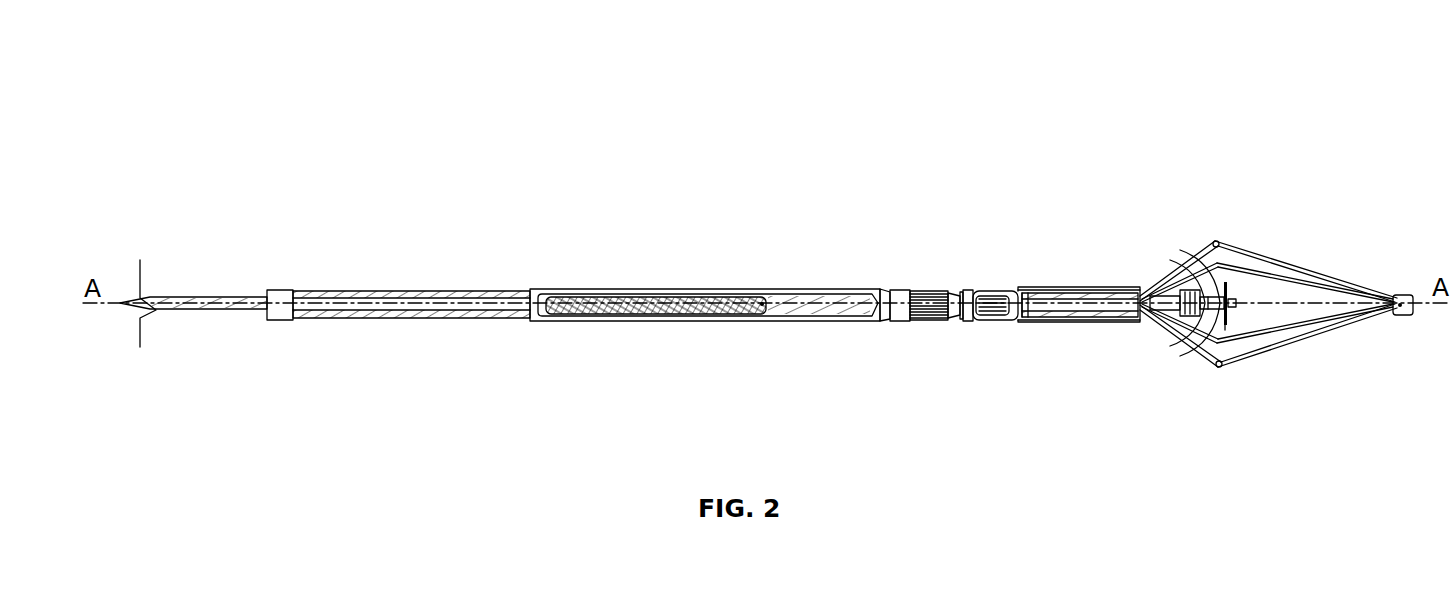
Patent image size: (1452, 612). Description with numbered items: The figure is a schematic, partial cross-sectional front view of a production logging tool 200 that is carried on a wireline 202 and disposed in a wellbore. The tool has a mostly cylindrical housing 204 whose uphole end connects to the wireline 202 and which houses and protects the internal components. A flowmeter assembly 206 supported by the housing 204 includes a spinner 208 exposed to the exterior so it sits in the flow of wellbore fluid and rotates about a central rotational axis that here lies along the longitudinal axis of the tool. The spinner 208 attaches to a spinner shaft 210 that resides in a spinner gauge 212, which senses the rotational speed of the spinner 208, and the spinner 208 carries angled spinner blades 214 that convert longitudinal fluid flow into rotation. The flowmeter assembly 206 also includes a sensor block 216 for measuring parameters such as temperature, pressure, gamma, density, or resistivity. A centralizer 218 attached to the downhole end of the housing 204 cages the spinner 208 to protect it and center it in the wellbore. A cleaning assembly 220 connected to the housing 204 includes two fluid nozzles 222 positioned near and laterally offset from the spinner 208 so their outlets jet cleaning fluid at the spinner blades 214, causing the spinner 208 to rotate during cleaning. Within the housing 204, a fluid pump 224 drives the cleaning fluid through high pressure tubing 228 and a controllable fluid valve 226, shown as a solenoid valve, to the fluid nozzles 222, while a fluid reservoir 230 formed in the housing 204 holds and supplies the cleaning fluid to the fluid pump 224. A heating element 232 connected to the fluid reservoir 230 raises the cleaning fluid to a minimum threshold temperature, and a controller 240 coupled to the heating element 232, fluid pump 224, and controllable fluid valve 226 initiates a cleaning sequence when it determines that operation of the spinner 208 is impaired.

The production logging tool 200 is at (318, 88).
The wireline 202 is at (200, 311).
The housing 204 is at (965, 283).
The flowmeter assembly 206 is at (1250, 296).
The spinner 208 is at (1246, 310).
The spinner shaft 210 is at (1216, 262).
The spinner gauge 212 is at (1065, 292).
The spinner blades 214 is at (1226, 326).
The sensor block 216 is at (410, 320).
The centralizer 218 is at (1340, 270).
The cleaning assembly 220 is at (1020, 283).
The fluid nozzle 222 is at (1205, 241).
The fluid pump 224 is at (904, 290).
The controllable fluid valve 226 is at (998, 312).
The high pressure tubing 228 is at (1082, 290).
The fluid reservoir 230 is at (712, 314).
The heating element 232 is at (654, 296).
The controller 240 is at (284, 290).